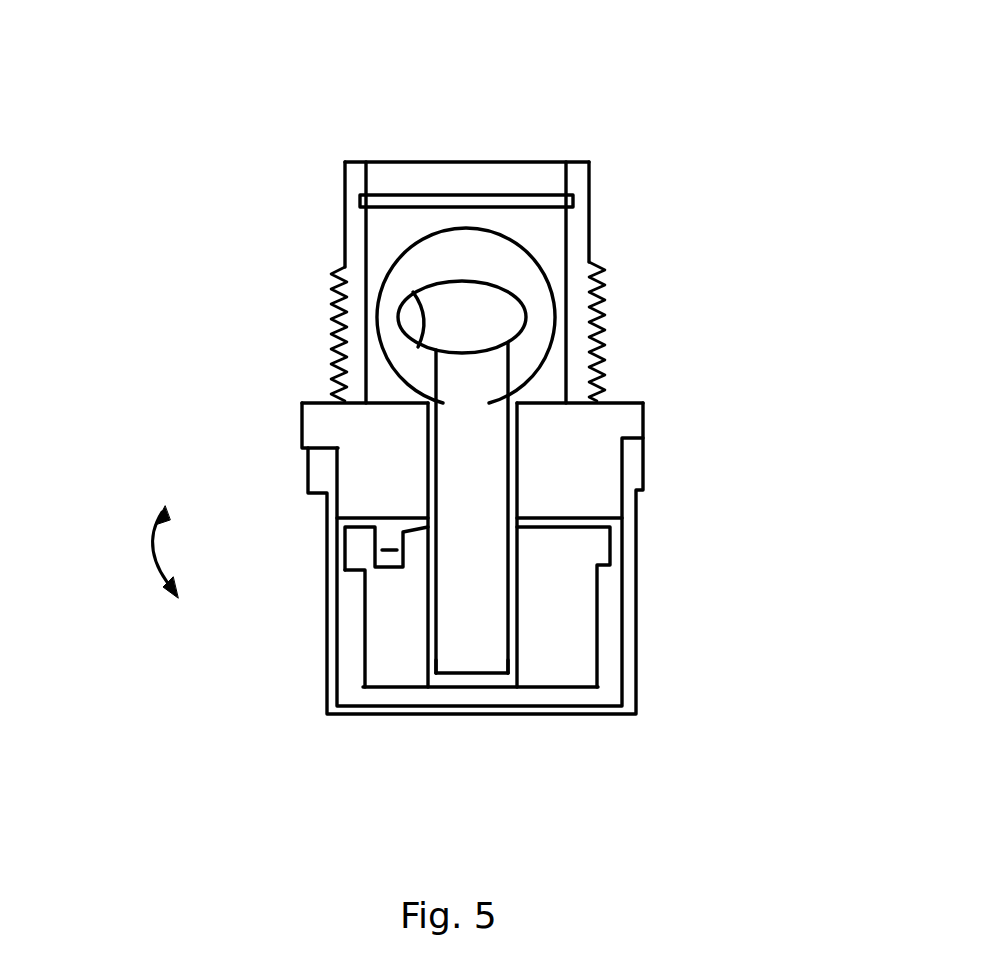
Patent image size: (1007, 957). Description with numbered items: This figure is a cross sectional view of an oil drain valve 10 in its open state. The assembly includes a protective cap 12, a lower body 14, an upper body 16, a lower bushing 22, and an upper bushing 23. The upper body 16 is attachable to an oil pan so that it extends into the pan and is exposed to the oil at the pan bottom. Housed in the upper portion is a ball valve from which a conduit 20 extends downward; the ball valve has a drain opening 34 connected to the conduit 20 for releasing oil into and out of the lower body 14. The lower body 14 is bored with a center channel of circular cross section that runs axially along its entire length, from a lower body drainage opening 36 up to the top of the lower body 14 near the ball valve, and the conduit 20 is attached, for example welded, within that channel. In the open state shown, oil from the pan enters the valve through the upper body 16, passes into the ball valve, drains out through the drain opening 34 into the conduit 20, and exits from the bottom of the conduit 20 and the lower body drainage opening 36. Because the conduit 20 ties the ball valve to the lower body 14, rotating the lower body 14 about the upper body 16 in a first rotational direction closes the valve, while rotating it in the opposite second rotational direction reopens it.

The oil drain valve 10 is at (240, 152).
The protective cap 12 is at (615, 642).
The lower body 14 is at (402, 655).
The upper body 16 is at (355, 317).
The conduit 20 is at (468, 480).
The lower bushing 22 is at (557, 385).
The upper bushing 23 is at (542, 245).
The drain opening 34 is at (483, 352).
The lower body drainage opening 36 is at (482, 680).